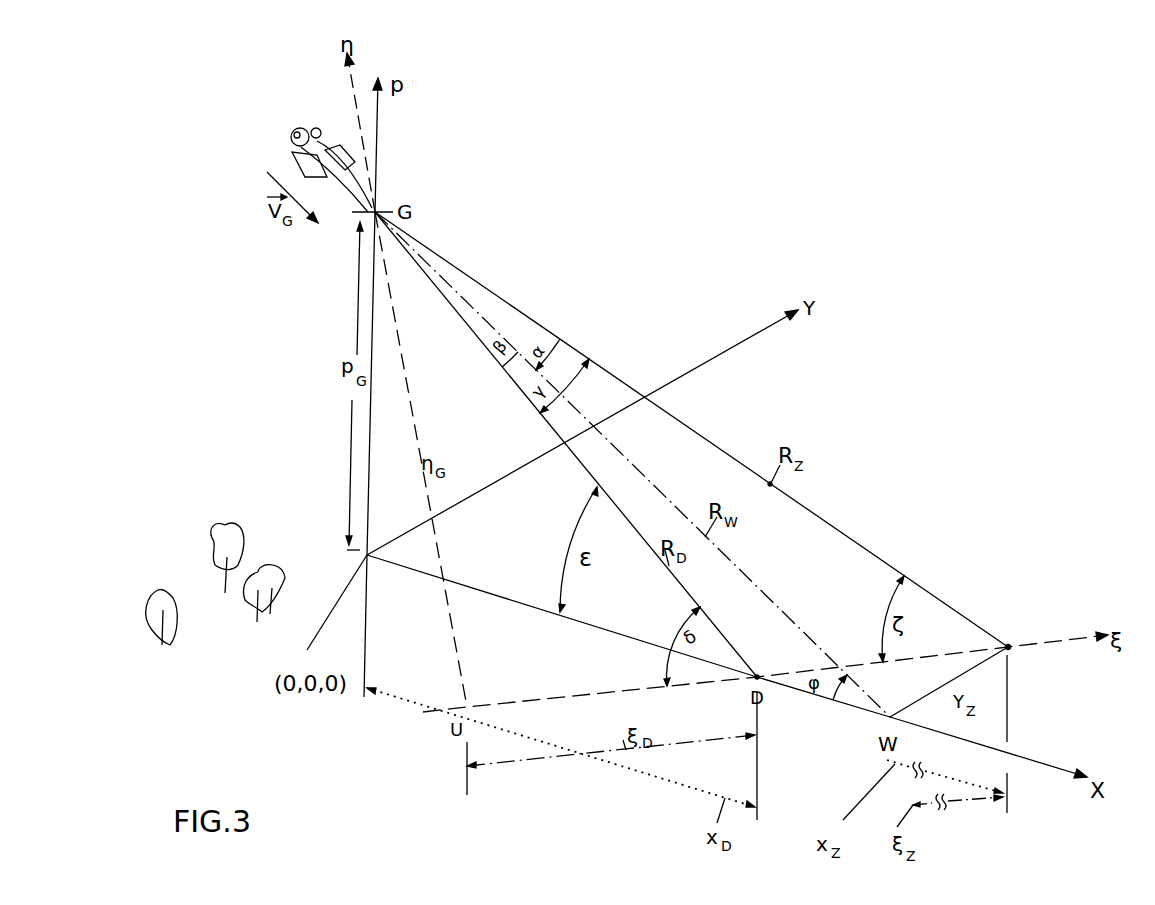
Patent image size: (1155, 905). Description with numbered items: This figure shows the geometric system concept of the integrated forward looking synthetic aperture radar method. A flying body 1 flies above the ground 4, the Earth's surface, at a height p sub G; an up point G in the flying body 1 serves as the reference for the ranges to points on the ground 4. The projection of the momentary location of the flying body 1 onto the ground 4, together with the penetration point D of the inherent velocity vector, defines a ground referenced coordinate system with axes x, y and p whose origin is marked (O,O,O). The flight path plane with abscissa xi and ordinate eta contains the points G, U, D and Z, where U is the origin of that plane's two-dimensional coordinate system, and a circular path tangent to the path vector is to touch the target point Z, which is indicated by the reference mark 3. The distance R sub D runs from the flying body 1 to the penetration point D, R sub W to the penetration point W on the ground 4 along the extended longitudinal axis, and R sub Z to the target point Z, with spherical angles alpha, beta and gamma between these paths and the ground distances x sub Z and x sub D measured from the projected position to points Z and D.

The flying body 1 is at (290, 150).
The target point Z 3 is at (1008, 647).
The ground 4 is at (215, 608).